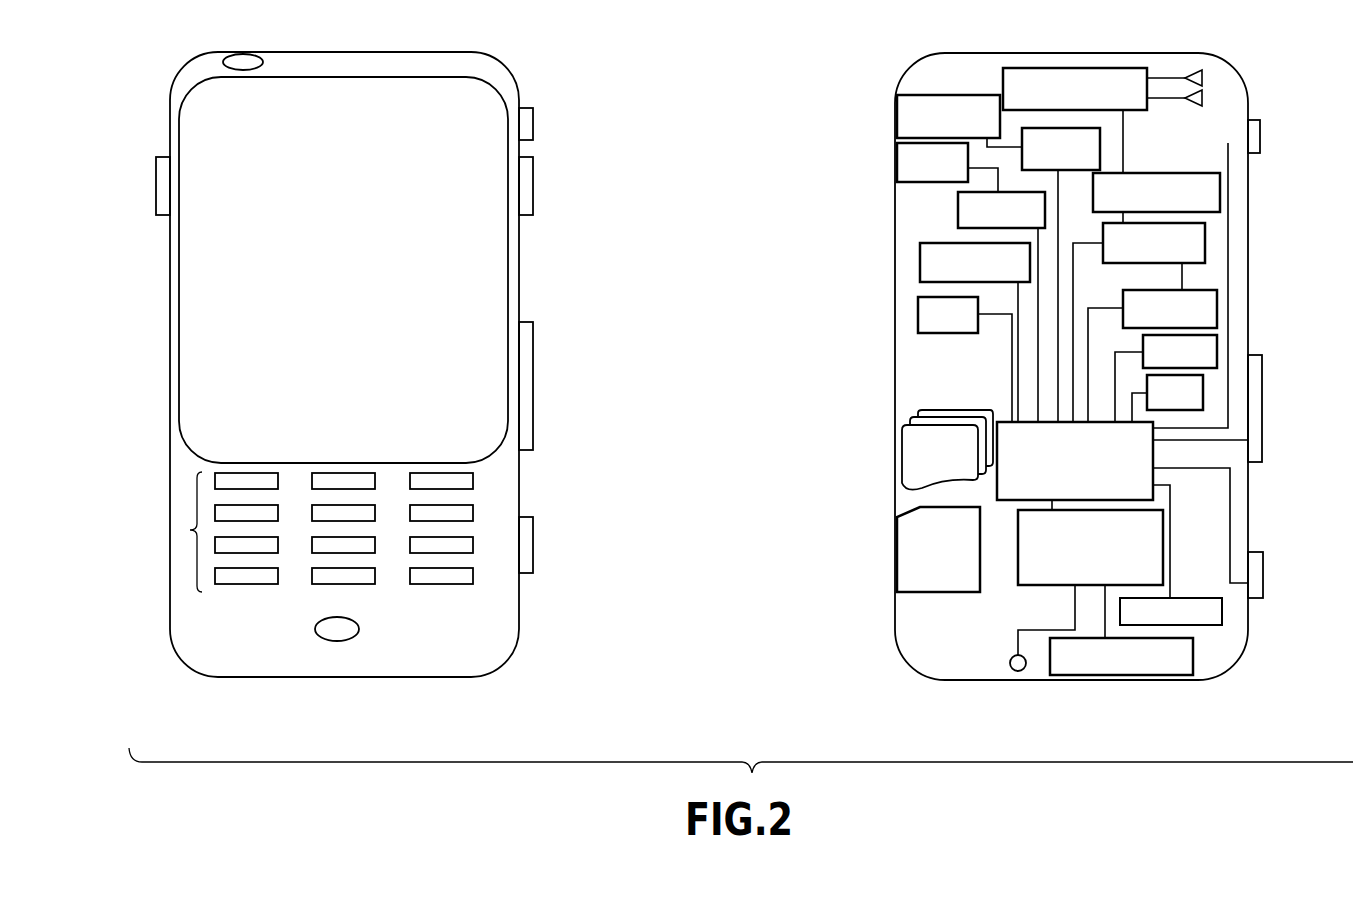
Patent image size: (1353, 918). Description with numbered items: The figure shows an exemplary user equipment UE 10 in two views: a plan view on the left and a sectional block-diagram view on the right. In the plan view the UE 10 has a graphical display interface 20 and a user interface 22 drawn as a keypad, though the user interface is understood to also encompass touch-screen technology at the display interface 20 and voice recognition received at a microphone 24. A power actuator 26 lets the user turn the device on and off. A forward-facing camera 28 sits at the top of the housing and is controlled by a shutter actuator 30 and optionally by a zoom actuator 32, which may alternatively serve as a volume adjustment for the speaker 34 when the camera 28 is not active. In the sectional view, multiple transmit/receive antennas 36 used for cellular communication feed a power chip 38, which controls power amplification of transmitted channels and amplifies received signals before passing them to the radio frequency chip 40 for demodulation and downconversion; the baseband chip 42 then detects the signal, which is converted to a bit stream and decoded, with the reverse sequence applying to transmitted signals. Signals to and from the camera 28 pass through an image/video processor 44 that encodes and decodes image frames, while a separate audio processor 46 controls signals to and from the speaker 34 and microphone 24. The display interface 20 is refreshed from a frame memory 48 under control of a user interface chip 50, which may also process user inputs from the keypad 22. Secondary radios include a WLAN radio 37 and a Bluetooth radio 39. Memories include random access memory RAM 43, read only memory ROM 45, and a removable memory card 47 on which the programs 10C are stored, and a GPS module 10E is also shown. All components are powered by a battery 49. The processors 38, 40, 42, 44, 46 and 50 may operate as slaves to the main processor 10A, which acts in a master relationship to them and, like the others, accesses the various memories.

The user equipment 10 is at (513, 717).
The main processor 10A is at (1005, 423).
The programs 10C is at (908, 462).
The GPS module/subsystem 10E is at (1262, 355).
The graphical display interface 20 is at (202, 285).
The user interface 22 is at (193, 530).
The microphone 24 is at (340, 632).
The power actuator 26 is at (533, 120).
The camera 28 is at (247, 55).
The shutter actuator 30 is at (527, 538).
The button 32 is at (527, 365).
The speaker 34 is at (162, 158).
The transmit/receive antennas 36 is at (1200, 68).
The WLAN radio 37 is at (927, 275).
The power chip 38 is at (1067, 72).
The Bluetooth radio 39 is at (927, 320).
The radio frequency chip 40 is at (1212, 202).
The baseband chip 42 is at (1210, 240).
The random access memory 43 is at (1212, 312).
The image/video processor 44 is at (1098, 158).
The read only memory 45 is at (1213, 352).
The audio processor 46 is at (958, 212).
The memory card 47 is at (905, 532).
The frame memory 48 is at (1120, 675).
The battery 49 is at (1233, 628).
The user interface chip 50 is at (1043, 575).